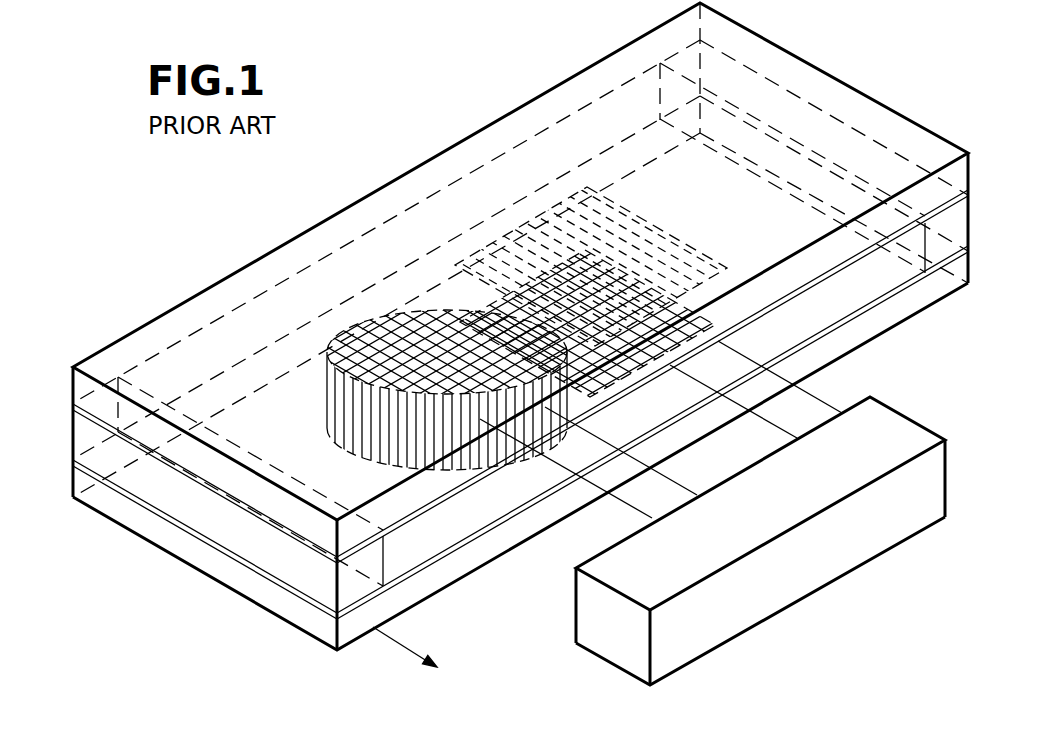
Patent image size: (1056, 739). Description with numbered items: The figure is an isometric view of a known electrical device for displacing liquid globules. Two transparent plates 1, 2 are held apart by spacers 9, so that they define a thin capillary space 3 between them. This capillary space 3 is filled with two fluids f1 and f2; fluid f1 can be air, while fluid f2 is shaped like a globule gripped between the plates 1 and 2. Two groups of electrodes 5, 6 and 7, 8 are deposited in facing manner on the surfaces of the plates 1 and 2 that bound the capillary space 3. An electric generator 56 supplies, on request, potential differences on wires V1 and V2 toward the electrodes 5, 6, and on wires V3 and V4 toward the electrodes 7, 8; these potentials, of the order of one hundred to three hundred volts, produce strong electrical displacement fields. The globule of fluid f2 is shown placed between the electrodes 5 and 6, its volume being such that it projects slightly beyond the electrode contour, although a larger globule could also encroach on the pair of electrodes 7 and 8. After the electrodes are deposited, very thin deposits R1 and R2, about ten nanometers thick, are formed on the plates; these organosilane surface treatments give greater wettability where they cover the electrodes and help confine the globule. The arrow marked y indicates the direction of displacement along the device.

The transparent plate 1 is at (893, 128).
The transparent plate 2 is at (920, 300).
The capillary space 3 is at (866, 312).
The electrode 5 is at (324, 334).
The electrode 6 is at (326, 394).
The electrode 7 is at (650, 238).
The electrode 8 is at (726, 300).
The spacer 9 is at (960, 220).
The electric generator 56 is at (914, 433).
The deposit R1 is at (968, 198).
The deposit R2 is at (970, 252).
The wire V1 is at (636, 498).
The wire V2 is at (679, 477).
The wire V3 is at (777, 420).
The wire V4 is at (821, 393).
The fluid f1 is at (440, 540).
The fluid f2 is at (342, 424).
The y-axis direction y is at (405, 656).